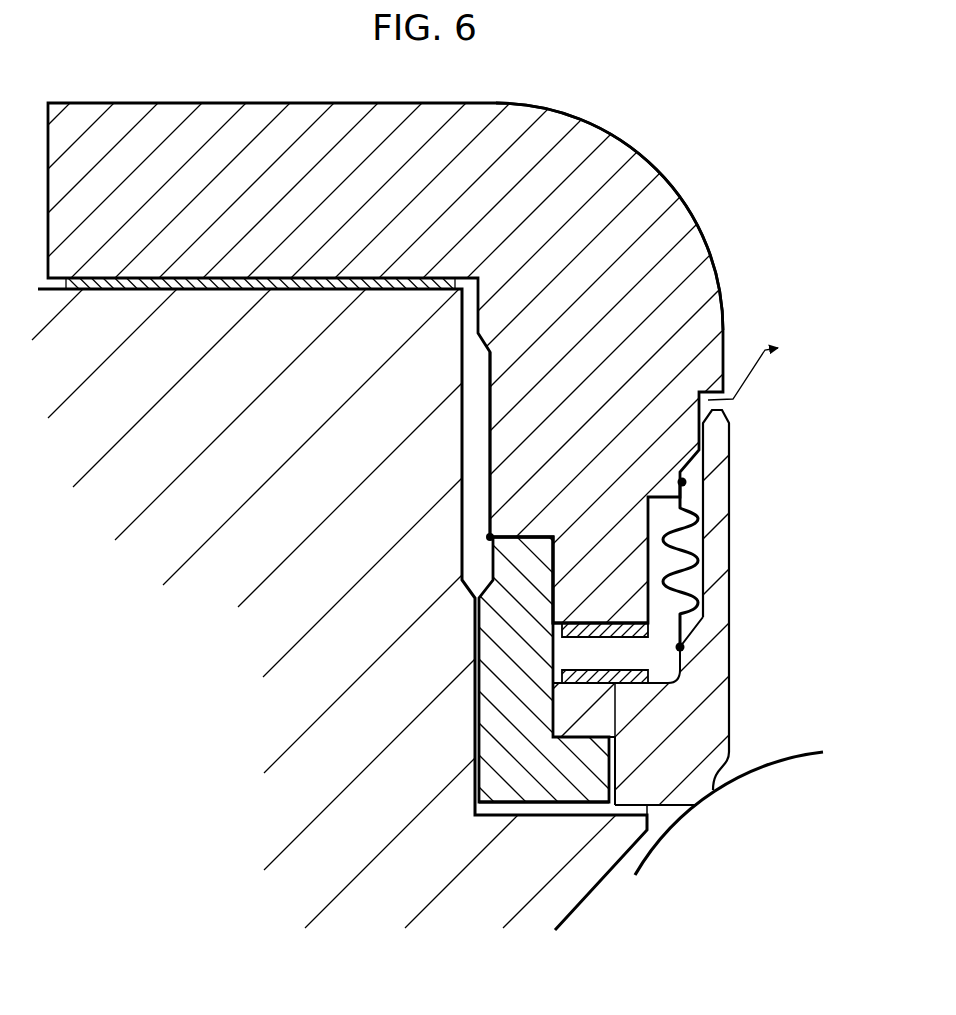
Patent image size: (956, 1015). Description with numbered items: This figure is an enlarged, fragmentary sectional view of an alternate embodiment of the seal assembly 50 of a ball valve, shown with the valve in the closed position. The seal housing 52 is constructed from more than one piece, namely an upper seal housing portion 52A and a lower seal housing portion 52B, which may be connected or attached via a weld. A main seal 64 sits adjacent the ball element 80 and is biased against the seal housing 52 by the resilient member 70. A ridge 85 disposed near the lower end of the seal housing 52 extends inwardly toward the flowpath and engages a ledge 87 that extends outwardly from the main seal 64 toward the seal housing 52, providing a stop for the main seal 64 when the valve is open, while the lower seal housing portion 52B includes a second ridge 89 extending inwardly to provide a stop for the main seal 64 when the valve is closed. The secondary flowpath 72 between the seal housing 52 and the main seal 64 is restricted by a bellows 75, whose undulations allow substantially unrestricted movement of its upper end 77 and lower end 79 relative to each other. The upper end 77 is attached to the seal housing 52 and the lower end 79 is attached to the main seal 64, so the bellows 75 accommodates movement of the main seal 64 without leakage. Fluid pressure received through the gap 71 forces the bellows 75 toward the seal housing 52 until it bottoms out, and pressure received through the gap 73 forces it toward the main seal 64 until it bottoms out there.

The seal assembly 50 is at (650, 120).
The seal housing 52 is at (687, 245).
The upper seal housing portion 52A is at (578, 372).
The lower seal housing portion 52B is at (537, 779).
The main seal 64 is at (713, 735).
The resilient member 70 is at (620, 645).
The gap 71 is at (710, 401).
The secondary flowpath 72 is at (753, 370).
The gap 73 is at (616, 802).
The bellows 75 is at (690, 546).
The upper end of the bellows 77 is at (682, 482).
The lower end of the bellows 79 is at (680, 647).
The ball element 80 is at (794, 820).
The ridge 85 is at (562, 793).
The ledge 87 is at (573, 702).
The second ridge 89 is at (553, 647).